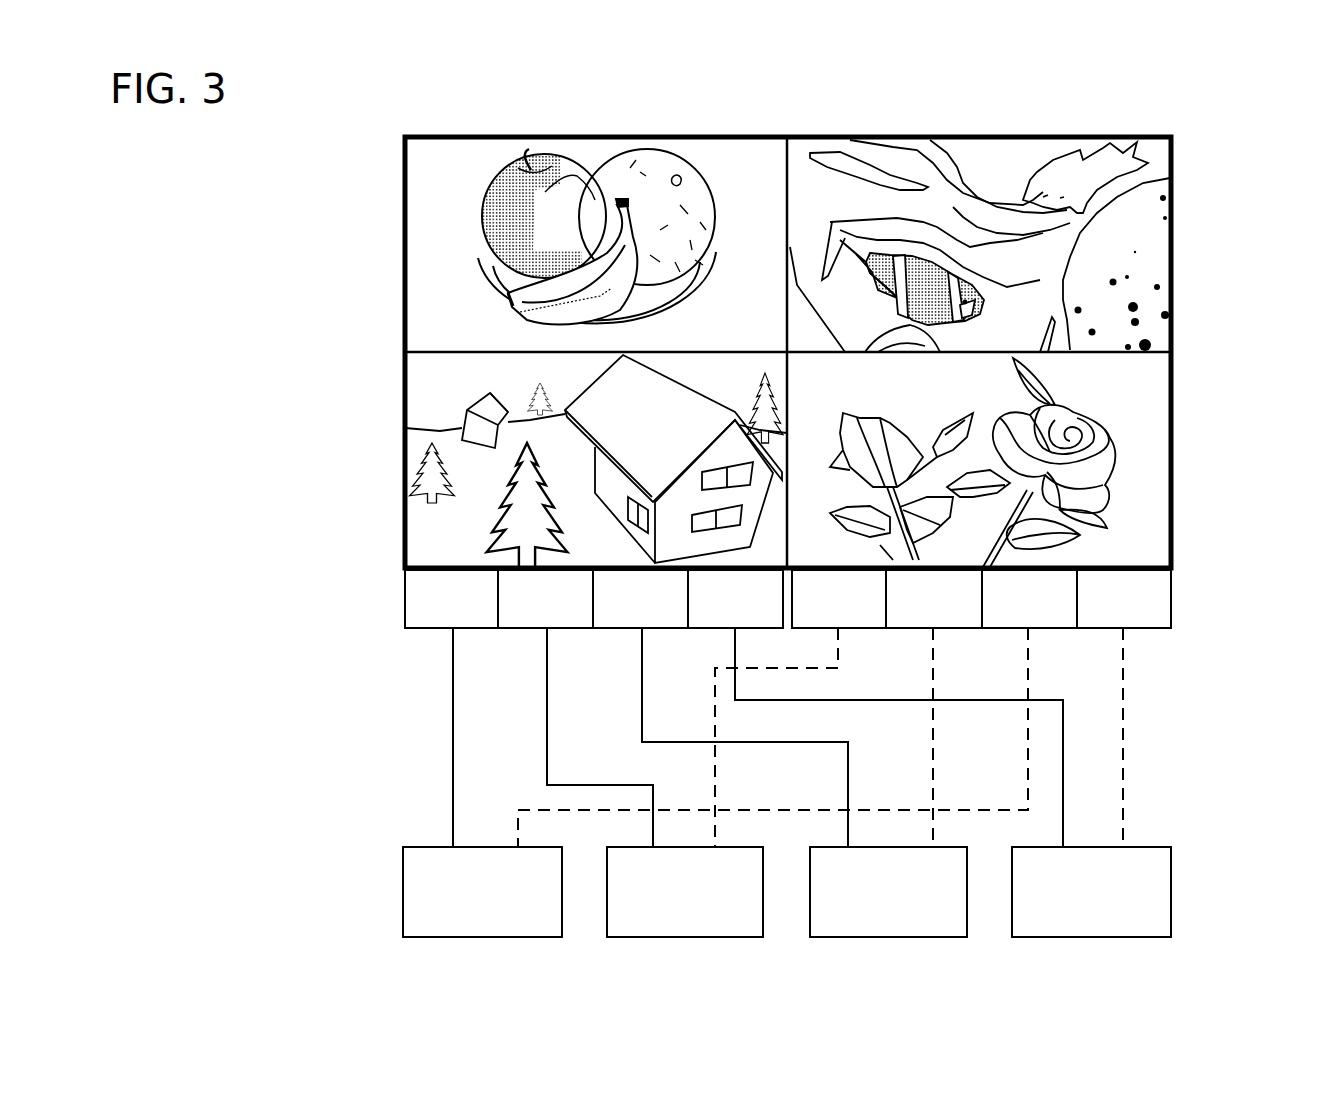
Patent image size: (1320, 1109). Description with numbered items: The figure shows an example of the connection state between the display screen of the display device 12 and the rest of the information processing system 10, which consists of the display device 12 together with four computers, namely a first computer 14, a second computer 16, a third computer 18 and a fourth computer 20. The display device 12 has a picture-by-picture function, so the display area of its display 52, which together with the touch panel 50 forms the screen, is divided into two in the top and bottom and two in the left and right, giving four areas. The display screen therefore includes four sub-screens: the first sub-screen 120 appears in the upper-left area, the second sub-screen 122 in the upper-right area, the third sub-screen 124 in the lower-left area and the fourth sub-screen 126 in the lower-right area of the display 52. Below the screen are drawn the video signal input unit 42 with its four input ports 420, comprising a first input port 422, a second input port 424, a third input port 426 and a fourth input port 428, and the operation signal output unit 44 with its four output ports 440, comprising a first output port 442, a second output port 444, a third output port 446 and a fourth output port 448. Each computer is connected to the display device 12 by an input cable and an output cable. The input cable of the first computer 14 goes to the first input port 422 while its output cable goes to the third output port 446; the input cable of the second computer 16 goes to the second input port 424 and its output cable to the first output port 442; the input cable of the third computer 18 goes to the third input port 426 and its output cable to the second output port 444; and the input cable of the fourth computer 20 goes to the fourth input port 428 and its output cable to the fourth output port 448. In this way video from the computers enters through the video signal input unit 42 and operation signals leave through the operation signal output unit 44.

The information processing system 10 is at (421, 91).
The display device 12 is at (812, 136).
The first computer 14 is at (458, 938).
The second computer 16 is at (668, 938).
The third computer 18 is at (875, 938).
The fourth computer 20 is at (1078, 938).
The video signal input unit 42 is at (400, 578).
The operation signal output unit 44 is at (1177, 578).
The touch panel 50 is at (1177, 296).
The display 52 is at (1105, 265).
The first sub-screen 120 is at (745, 147).
The second sub-screen 122 is at (1018, 148).
The third sub-screen 124 is at (410, 385).
The fourth sub-screen 126 is at (1164, 430).
The input ports 420 is at (405, 620).
The first input port 422 is at (420, 630).
The second input port 424 is at (523, 630).
The third input port 426 is at (618, 630).
The fourth input port 428 is at (708, 630).
The output ports 440 is at (1171, 613).
The first output port 442 is at (862, 630).
The second output port 444 is at (960, 630).
The third output port 446 is at (1055, 630).
The fourth output port 448 is at (1157, 630).